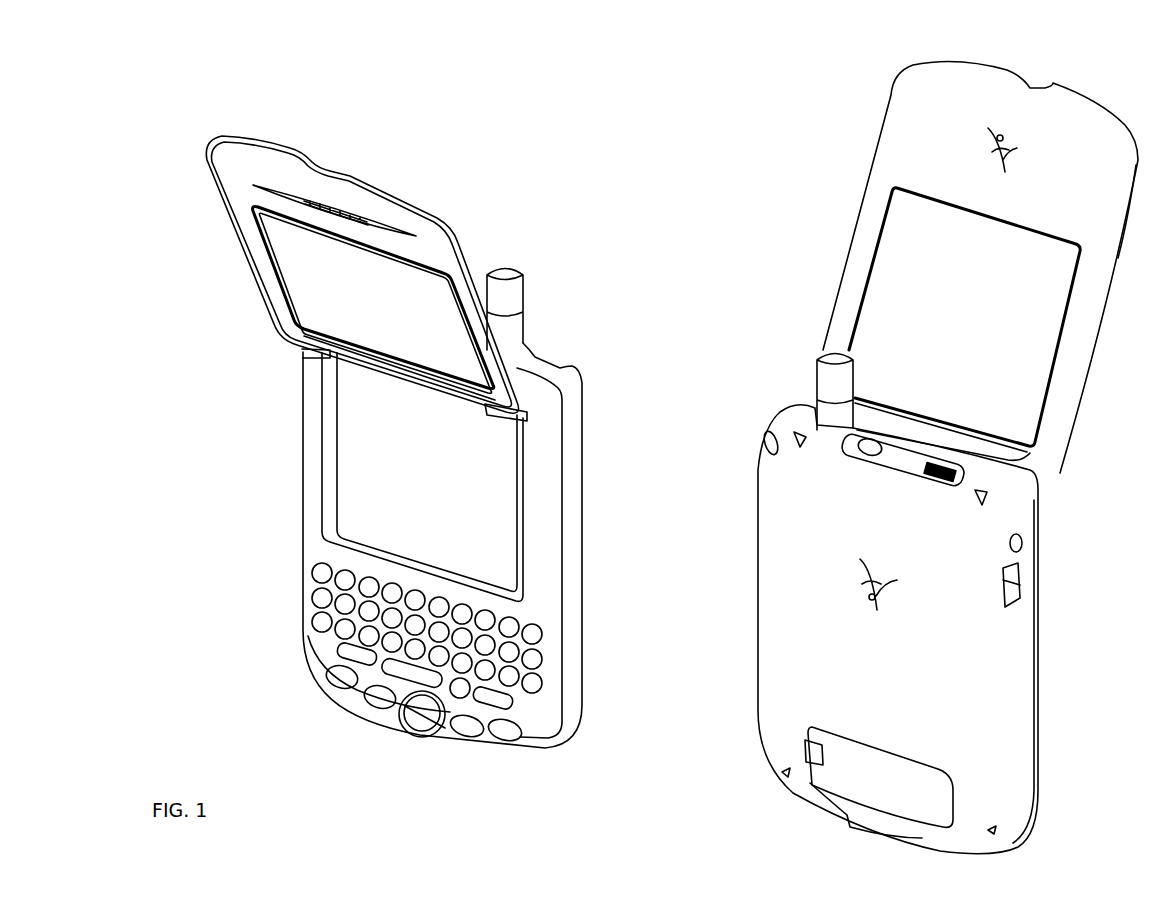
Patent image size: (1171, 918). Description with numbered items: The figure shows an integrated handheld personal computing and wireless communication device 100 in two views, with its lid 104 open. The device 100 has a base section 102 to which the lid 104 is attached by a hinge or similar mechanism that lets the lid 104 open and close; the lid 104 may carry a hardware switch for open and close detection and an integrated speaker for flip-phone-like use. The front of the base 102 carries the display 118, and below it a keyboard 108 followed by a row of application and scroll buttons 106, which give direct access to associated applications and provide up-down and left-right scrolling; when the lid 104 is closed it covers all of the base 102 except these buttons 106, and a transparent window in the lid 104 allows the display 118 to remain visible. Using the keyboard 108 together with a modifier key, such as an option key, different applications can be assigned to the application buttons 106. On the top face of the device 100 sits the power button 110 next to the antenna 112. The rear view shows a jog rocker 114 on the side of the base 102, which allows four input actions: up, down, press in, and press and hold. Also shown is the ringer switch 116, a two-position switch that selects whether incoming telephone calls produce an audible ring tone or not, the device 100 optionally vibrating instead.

The integrated device 100 is at (283, 463).
The base section 102 is at (568, 527).
The lid 104 is at (408, 222).
The application and scroll buttons 106 is at (508, 733).
The keyboard 108 is at (543, 665).
The power button 110 is at (866, 450).
The antenna 112 is at (833, 378).
The jog rocker 114 is at (1017, 583).
The ringer switch 116 is at (963, 467).
The display 118 is at (375, 463).